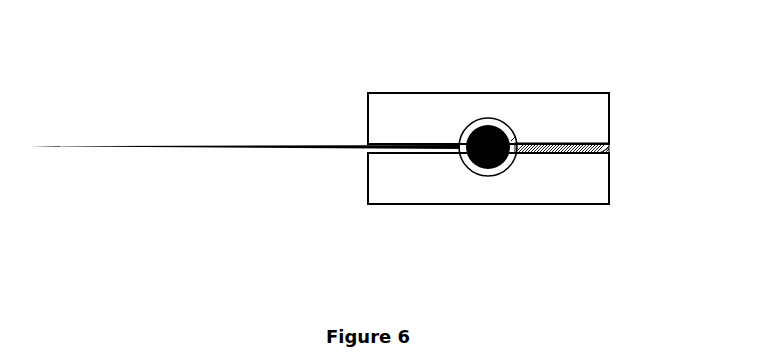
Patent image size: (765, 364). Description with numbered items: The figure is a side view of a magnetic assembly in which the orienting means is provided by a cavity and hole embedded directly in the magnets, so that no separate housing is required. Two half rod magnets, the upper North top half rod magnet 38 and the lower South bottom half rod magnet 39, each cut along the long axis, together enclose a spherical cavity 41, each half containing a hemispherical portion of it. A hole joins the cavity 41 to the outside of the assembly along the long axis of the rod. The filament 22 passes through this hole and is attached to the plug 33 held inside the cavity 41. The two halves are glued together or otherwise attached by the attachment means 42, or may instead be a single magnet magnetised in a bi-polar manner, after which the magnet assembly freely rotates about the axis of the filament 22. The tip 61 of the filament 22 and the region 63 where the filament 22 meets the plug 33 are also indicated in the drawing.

The filament 22 is at (243, 146).
The needle tip 61 is at (31, 146).
The top half rod magnet 38 is at (415, 114).
The bottom half rod magnet 39 is at (430, 182).
The cavity 41 is at (489, 122).
The plug 33 is at (508, 168).
The attachment means 42 is at (611, 140).
The core interface 63 is at (515, 136).